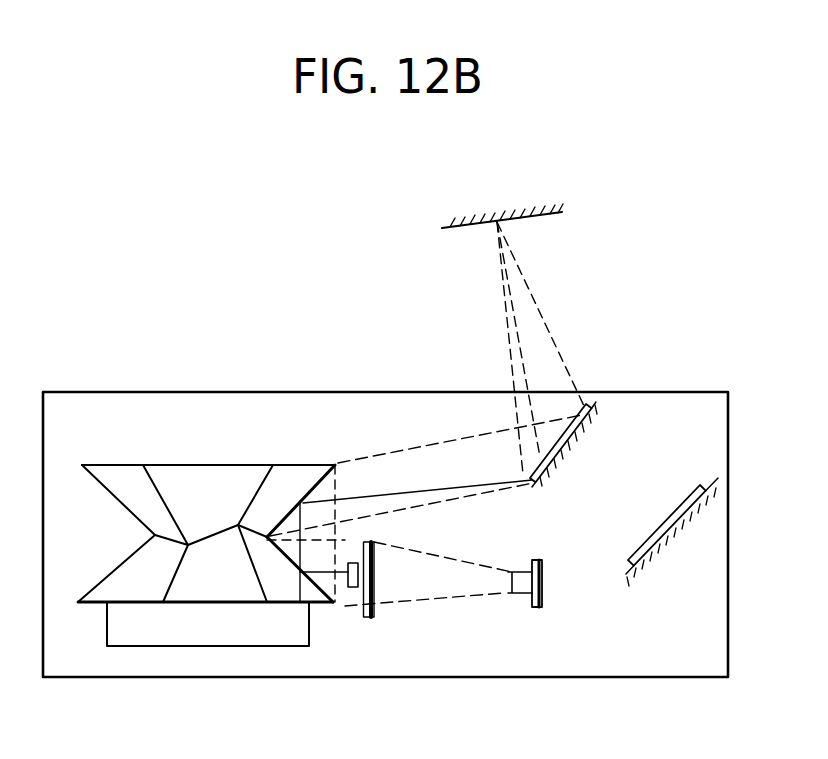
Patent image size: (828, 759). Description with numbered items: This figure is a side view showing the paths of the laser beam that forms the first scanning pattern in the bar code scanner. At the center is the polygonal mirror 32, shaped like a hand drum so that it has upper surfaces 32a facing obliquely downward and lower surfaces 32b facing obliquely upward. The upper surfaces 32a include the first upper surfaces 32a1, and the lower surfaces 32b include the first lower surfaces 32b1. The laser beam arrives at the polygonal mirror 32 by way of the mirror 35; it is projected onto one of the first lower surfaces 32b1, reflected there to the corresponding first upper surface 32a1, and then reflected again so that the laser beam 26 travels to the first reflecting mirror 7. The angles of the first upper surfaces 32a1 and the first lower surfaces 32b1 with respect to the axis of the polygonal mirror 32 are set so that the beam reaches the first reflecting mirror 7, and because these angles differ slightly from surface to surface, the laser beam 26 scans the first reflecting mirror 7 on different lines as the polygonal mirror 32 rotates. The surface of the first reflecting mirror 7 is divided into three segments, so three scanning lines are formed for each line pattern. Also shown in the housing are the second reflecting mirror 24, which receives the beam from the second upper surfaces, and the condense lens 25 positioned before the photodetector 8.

The polygonal mirror 32 is at (222, 460).
The upper surfaces 32a is at (117, 476).
The first upper surfaces 32a1 is at (306, 497).
The lower surfaces 32b is at (118, 583).
The first lower surfaces 32b1 is at (290, 567).
The laser beam 26 is at (393, 488).
The first reflecting mirror 7 is at (590, 412).
The second reflecting mirror 24 is at (685, 498).
The condense lens 25 is at (377, 617).
The mirror 35 is at (348, 582).
The photodetector 8 is at (542, 590).